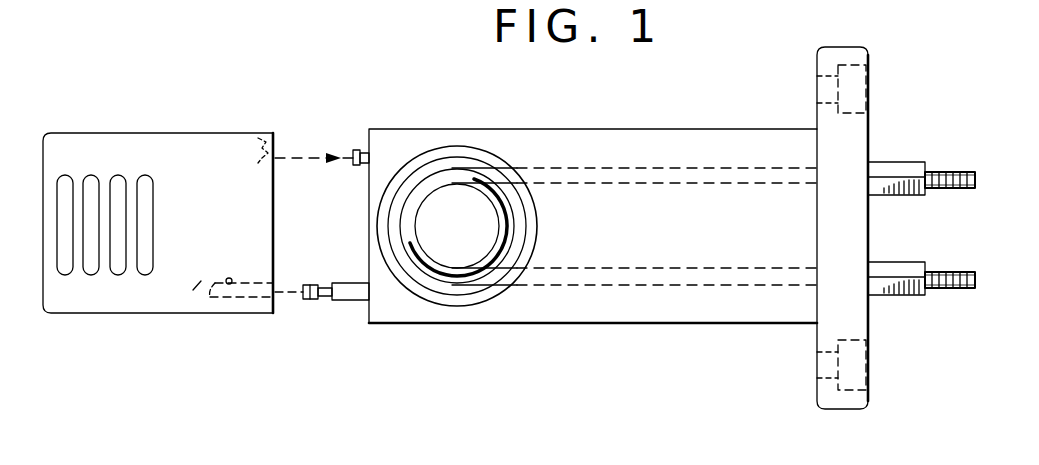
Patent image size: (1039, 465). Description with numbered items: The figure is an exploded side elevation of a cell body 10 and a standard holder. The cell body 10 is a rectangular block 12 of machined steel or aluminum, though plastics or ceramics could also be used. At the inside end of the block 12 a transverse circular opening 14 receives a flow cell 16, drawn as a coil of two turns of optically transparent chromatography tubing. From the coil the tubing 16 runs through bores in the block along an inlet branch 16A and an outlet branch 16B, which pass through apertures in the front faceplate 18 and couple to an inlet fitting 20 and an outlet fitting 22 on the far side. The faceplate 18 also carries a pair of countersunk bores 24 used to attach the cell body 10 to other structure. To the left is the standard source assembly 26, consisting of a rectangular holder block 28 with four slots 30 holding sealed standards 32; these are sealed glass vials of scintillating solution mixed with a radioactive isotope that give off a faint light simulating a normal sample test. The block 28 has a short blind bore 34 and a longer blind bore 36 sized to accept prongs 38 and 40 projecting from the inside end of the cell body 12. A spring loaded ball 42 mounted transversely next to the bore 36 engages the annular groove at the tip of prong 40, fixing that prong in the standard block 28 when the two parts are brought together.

The cell body 10 is at (604, 336).
The rectangular block 12 is at (558, 128).
The transverse circular opening 14 is at (430, 160).
The flow cell 16 is at (436, 272).
The inlet branch 16A is at (728, 172).
The outlet branch 16B is at (716, 286).
The front faceplate 18 is at (852, 410).
The inlet fitting 20 is at (896, 168).
The outlet fitting 22 is at (910, 296).
The countersunk bores 24 is at (858, 88).
The standard source assembly 26 is at (179, 116).
The holder block 28 is at (85, 316).
The slots 30 is at (96, 107).
The sealed standards 32 is at (118, 175).
The short blind bore 34 is at (265, 130).
The longer blind bore 36 is at (243, 298).
The prong 38 is at (363, 166).
The prong 40 is at (349, 284).
The spring loaded ball 42 is at (182, 305).